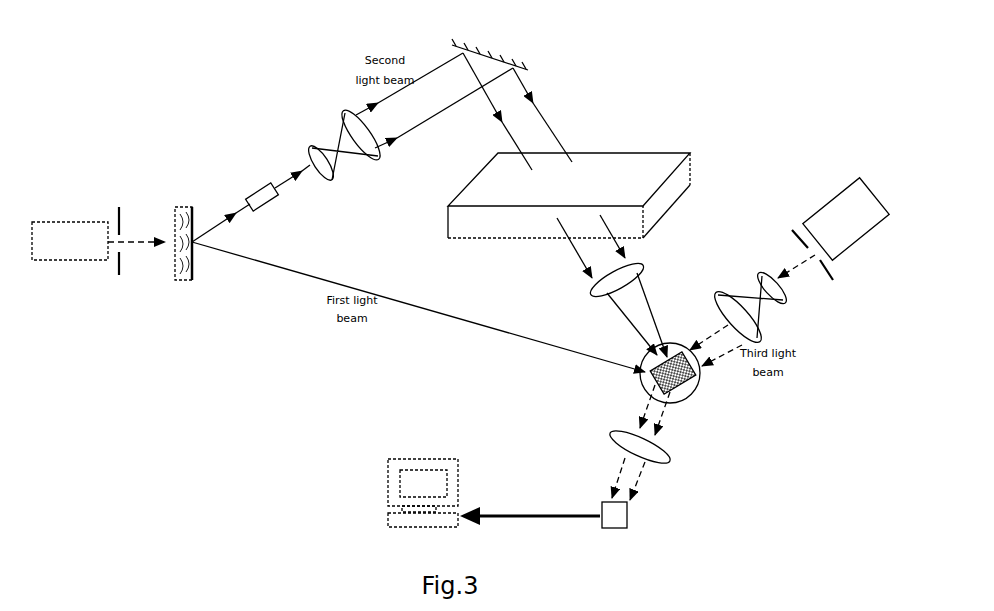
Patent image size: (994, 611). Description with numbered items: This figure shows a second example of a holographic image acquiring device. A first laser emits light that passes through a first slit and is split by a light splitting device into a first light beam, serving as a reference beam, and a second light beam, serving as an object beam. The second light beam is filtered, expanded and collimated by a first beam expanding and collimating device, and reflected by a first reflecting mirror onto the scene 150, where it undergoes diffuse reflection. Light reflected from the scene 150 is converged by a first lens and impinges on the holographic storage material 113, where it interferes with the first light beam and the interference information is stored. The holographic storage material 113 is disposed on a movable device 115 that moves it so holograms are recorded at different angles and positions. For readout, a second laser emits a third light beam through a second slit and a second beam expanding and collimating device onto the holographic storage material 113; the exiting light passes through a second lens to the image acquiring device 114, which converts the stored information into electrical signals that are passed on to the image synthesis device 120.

The scene 150 is at (622, 165).
The holographic storage material 113 is at (698, 380).
The movable device 115 is at (692, 397).
The image acquiring device 114 is at (602, 508).
The image synthesis device 120 is at (410, 463).